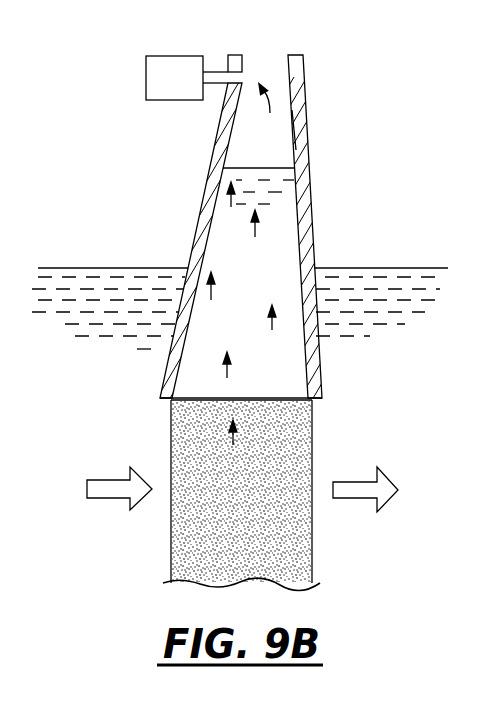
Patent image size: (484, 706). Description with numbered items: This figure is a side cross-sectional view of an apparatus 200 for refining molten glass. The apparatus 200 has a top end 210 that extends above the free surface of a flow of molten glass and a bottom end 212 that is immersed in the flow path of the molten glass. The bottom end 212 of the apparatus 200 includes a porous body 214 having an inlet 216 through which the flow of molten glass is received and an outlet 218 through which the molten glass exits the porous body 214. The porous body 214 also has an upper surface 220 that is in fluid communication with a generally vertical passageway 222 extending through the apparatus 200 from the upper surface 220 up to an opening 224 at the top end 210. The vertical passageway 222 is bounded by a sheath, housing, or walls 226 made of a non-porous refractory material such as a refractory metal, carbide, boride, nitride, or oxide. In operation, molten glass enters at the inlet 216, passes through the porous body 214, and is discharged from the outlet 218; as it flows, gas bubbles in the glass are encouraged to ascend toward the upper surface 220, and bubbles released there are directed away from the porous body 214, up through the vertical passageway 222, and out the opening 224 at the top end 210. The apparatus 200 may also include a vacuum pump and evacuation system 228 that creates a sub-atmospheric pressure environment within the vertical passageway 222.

The apparatus for refining molten glass 200 is at (130, 42).
The top end 210 is at (315, 72).
The bottom end 212 is at (318, 573).
The porous body 214 is at (185, 420).
The inlet 216 is at (172, 565).
The outlet 218 is at (313, 542).
The upper surface 220 is at (278, 398).
The vertical passageway 222 is at (283, 247).
The opening 224 is at (263, 62).
The walls 226 is at (304, 130).
The vacuum pump and evacuation system 228 is at (195, 90).